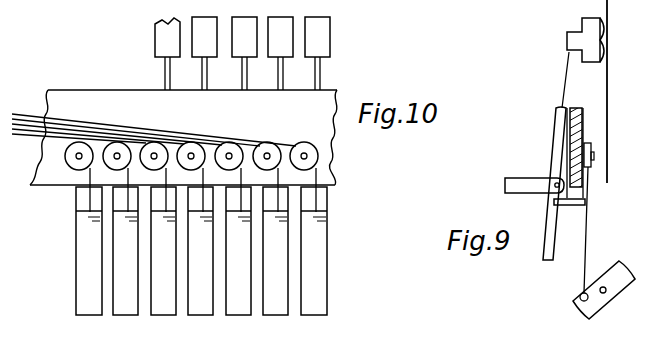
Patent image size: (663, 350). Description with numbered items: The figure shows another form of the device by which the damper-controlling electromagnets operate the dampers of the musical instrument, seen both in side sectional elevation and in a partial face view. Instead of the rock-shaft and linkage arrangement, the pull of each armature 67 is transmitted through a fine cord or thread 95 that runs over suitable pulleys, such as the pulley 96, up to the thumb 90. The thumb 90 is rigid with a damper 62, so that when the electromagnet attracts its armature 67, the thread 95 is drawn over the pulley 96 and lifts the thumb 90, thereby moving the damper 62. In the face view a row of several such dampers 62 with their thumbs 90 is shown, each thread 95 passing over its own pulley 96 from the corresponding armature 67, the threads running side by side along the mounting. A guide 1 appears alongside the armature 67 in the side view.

In FIG. 9, the guide plate 1 is at (608, 100).
In FIG. 10, the damper 62 is at (331, 42).
In FIG. 9, the damper 62 is at (602, 48).
In FIG. 9, the armature 67 is at (612, 265).
In FIG. 10, the thumb 90 is at (330, 213).
In FIG. 9, the thumb 90 is at (575, 210).
In FIG. 10, the fine cord or thread 95 is at (242, 141).
In FIG. 9, the fine cord or thread 95 is at (587, 220).
In FIG. 10, the pulley 96 is at (295, 148).